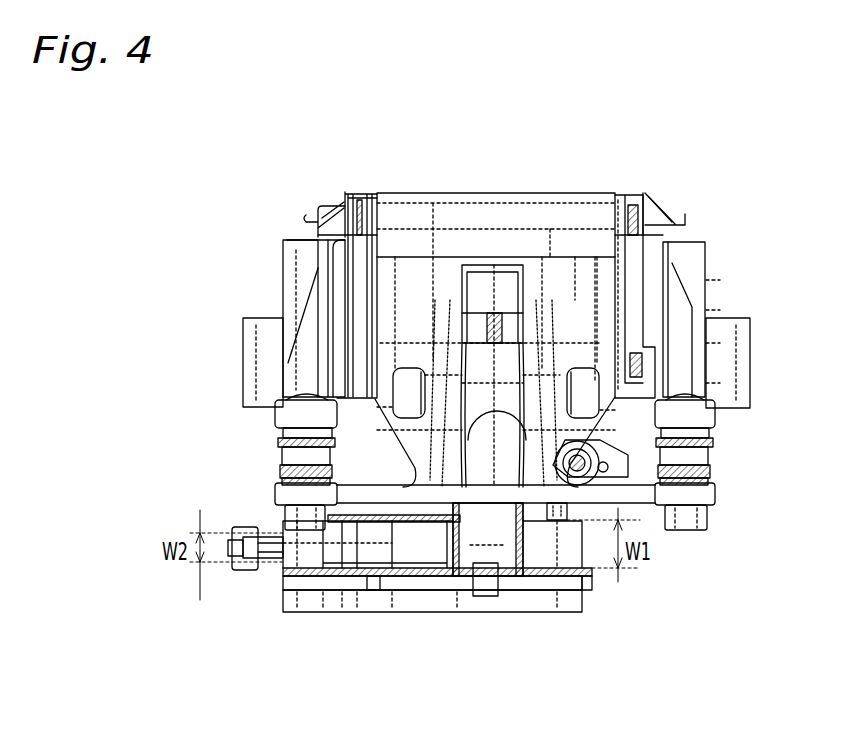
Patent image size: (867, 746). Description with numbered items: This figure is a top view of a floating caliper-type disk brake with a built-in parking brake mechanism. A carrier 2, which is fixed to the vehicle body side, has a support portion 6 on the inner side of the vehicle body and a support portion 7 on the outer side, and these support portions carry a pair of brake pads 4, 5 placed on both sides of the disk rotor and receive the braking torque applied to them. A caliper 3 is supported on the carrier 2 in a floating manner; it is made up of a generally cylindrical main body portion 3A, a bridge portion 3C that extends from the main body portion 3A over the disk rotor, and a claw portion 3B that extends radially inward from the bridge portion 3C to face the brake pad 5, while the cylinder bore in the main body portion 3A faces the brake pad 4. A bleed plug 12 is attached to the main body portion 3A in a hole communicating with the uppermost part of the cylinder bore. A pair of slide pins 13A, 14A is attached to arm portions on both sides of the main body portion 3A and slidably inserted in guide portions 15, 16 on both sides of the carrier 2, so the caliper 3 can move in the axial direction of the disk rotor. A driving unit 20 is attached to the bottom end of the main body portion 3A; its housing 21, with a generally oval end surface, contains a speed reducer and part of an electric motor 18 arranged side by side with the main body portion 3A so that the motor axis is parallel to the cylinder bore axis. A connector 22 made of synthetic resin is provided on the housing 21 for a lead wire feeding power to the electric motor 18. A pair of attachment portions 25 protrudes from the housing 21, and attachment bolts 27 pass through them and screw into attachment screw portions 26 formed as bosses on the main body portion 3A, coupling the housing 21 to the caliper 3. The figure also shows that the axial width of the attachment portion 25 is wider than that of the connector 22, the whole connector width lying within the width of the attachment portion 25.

The carrier 2 is at (281, 254).
The caliper 3 is at (466, 190).
The main body portion 3A is at (372, 452).
The claw portion 3B is at (538, 193).
The bridge portion 3C is at (575, 270).
The brake pad 4 is at (647, 322).
The brake pad 5 is at (640, 262).
The support portion 6 is at (348, 345).
The support portion 7 is at (318, 236).
The bleed plug 12 is at (708, 447).
The slide pin 13A is at (685, 524).
The slide pin 14A is at (305, 522).
The guide portion 15 is at (708, 385).
The guide portion 16 is at (296, 340).
The electric motor 18 is at (332, 460).
The driving unit 20 is at (523, 614).
The housing 21 is at (383, 600).
The connector 22 is at (243, 572).
The attachment portion 25 is at (475, 580).
The attachment screw portion 26 is at (510, 512).
The attachment bolt 27 is at (490, 597).